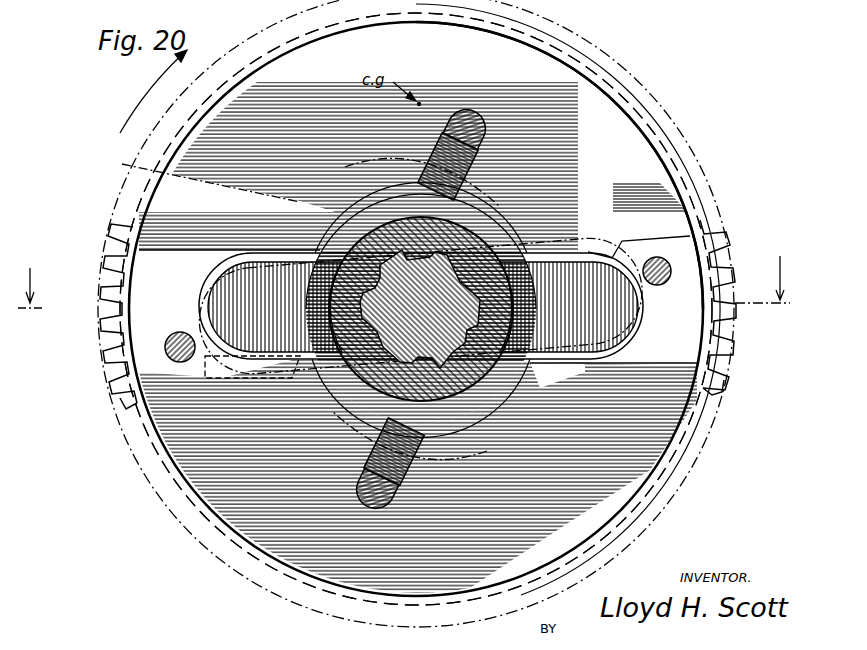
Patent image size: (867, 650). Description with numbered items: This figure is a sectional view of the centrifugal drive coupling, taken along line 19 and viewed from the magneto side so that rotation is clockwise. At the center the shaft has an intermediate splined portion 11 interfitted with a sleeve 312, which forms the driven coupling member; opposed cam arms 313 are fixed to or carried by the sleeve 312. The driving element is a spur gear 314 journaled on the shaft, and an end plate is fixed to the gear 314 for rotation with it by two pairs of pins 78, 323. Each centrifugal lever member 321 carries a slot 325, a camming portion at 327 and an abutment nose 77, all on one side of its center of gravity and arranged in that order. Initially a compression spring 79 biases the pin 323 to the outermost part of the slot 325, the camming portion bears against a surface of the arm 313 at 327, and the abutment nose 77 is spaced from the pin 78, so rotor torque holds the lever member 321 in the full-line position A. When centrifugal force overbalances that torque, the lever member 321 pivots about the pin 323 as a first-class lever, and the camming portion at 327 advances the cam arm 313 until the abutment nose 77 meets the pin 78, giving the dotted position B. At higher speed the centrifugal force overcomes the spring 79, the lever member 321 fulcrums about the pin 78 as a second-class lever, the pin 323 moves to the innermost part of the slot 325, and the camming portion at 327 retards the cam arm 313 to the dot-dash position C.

The splined portion 11 is at (442, 266).
The section line 19 is at (404, 272).
The abutment nose 77 is at (690, 215).
The pin 78 is at (180, 332).
The compression spring 79 is at (421, 310).
The sleeve 312 is at (422, 339).
The cam arm 313 is at (207, 292).
The spur gear 314 is at (106, 300).
The centrifugal lever member 321 is at (497, 45).
The pin 323 is at (463, 118).
The slot 325 is at (450, 138).
The camming portion 327 is at (590, 250).
The initial position A is at (336, 33).
The advanced position B is at (138, 193).
The retarded position C is at (140, 152).